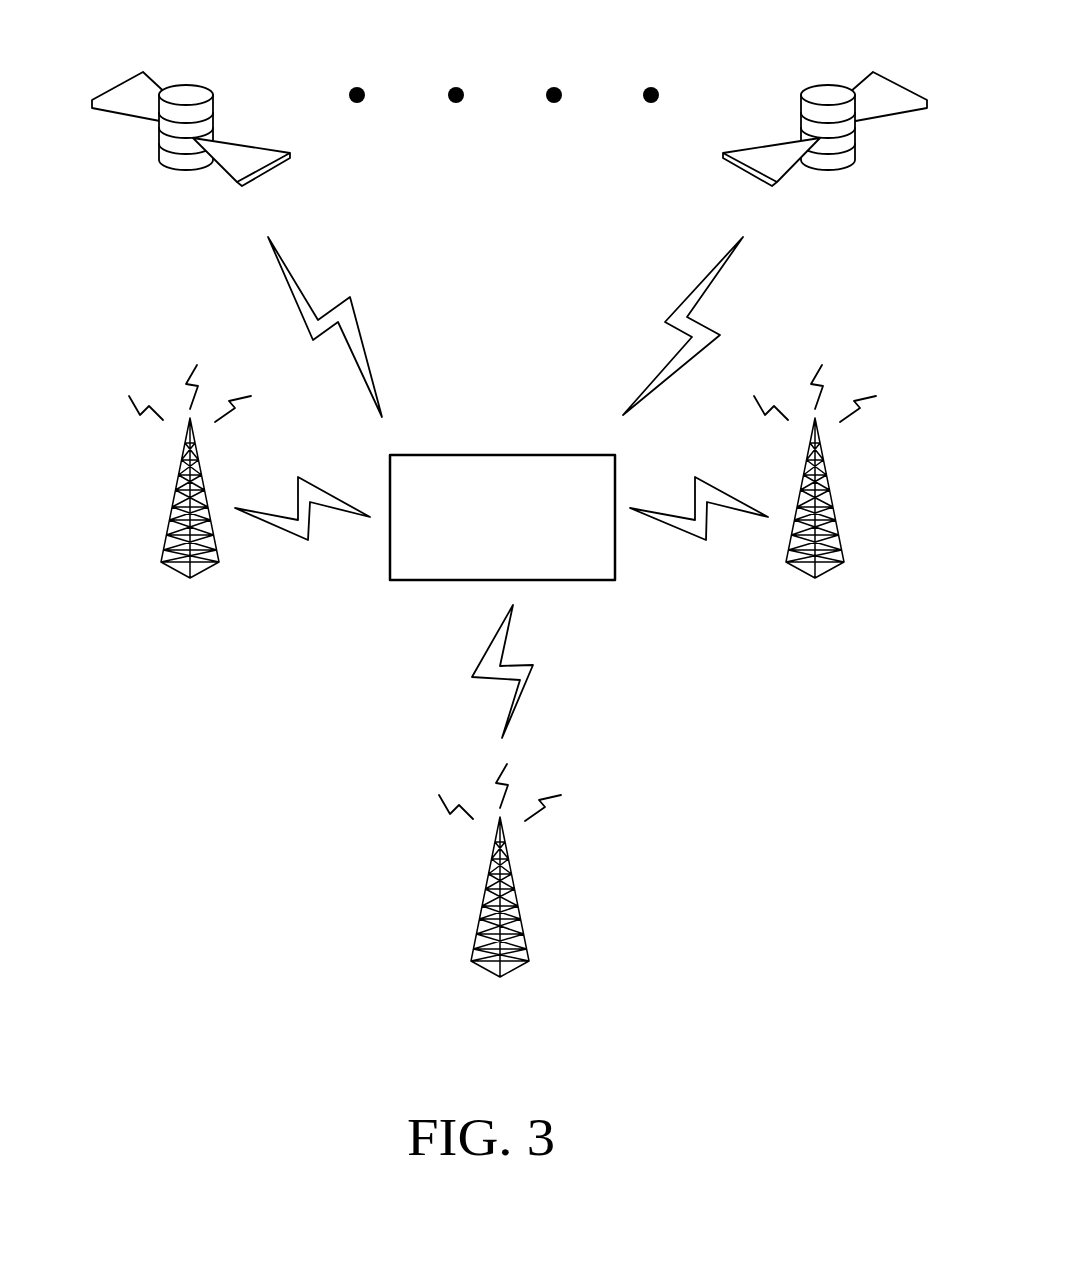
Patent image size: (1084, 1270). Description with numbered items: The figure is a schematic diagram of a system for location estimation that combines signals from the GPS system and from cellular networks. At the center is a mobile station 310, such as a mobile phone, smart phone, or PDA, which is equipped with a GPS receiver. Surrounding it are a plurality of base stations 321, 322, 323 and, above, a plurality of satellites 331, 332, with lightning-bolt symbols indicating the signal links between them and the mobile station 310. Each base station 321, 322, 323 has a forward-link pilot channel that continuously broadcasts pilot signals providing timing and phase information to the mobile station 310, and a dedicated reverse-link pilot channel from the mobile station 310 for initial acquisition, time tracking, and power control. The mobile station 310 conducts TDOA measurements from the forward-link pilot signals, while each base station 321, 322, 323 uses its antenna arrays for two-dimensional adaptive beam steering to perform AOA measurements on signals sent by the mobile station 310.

The mobile station 310 is at (505, 454).
The base station 321 is at (172, 493).
The base station 322 is at (517, 893).
The base station 323 is at (831, 493).
The satellite 331 is at (185, 88).
The satellite 332 is at (830, 88).